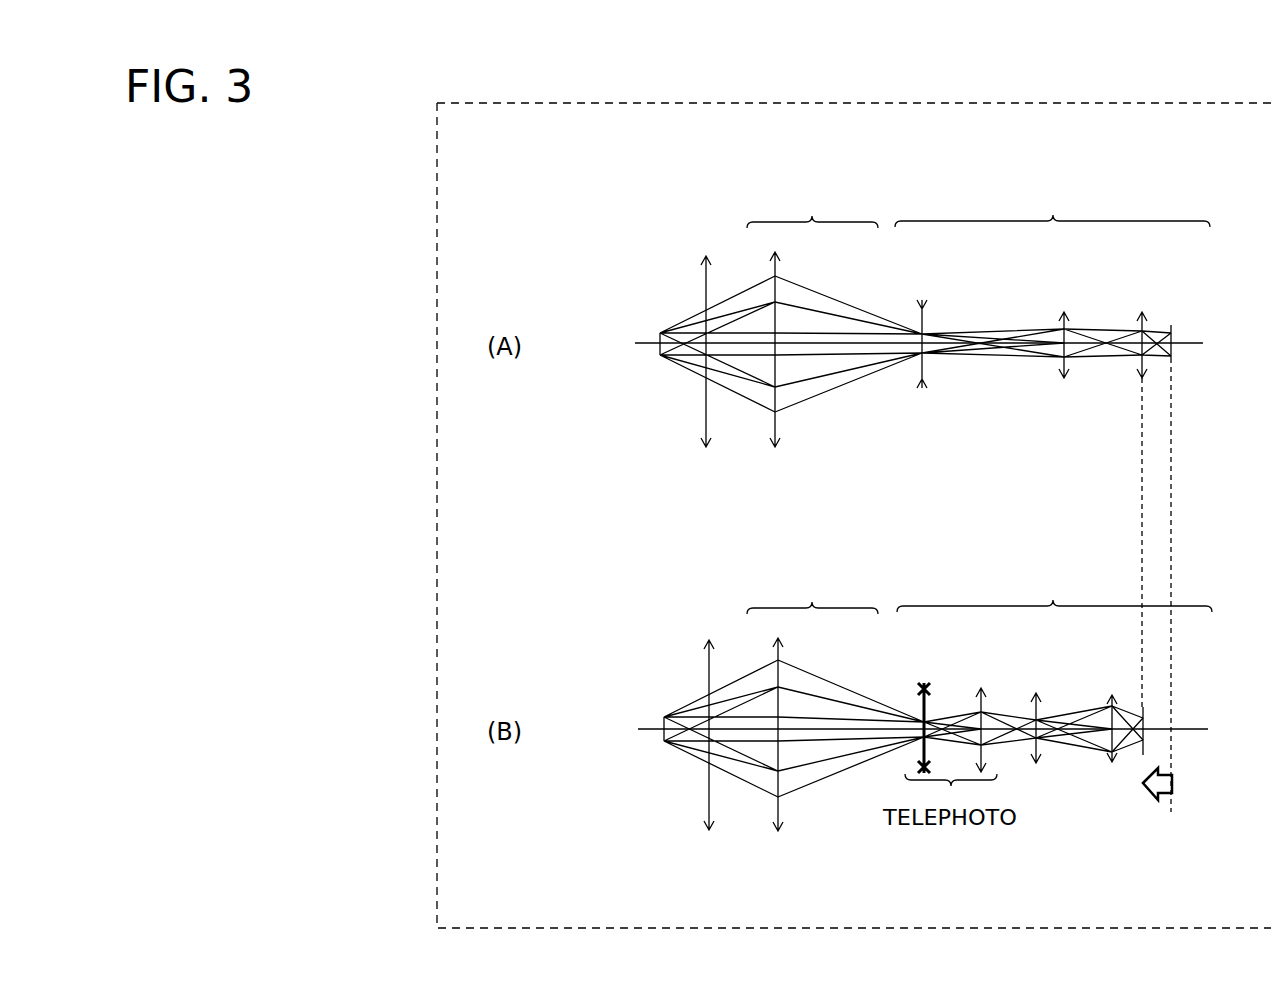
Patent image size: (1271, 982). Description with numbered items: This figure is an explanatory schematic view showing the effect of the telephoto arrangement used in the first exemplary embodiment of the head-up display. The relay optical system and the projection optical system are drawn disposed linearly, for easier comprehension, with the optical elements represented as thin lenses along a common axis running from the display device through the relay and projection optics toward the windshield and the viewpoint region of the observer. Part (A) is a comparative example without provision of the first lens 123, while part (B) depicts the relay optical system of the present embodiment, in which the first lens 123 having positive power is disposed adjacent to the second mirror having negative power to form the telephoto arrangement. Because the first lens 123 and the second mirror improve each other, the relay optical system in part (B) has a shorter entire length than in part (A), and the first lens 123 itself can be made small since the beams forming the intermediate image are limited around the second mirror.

The first lens 123 is at (985, 692).